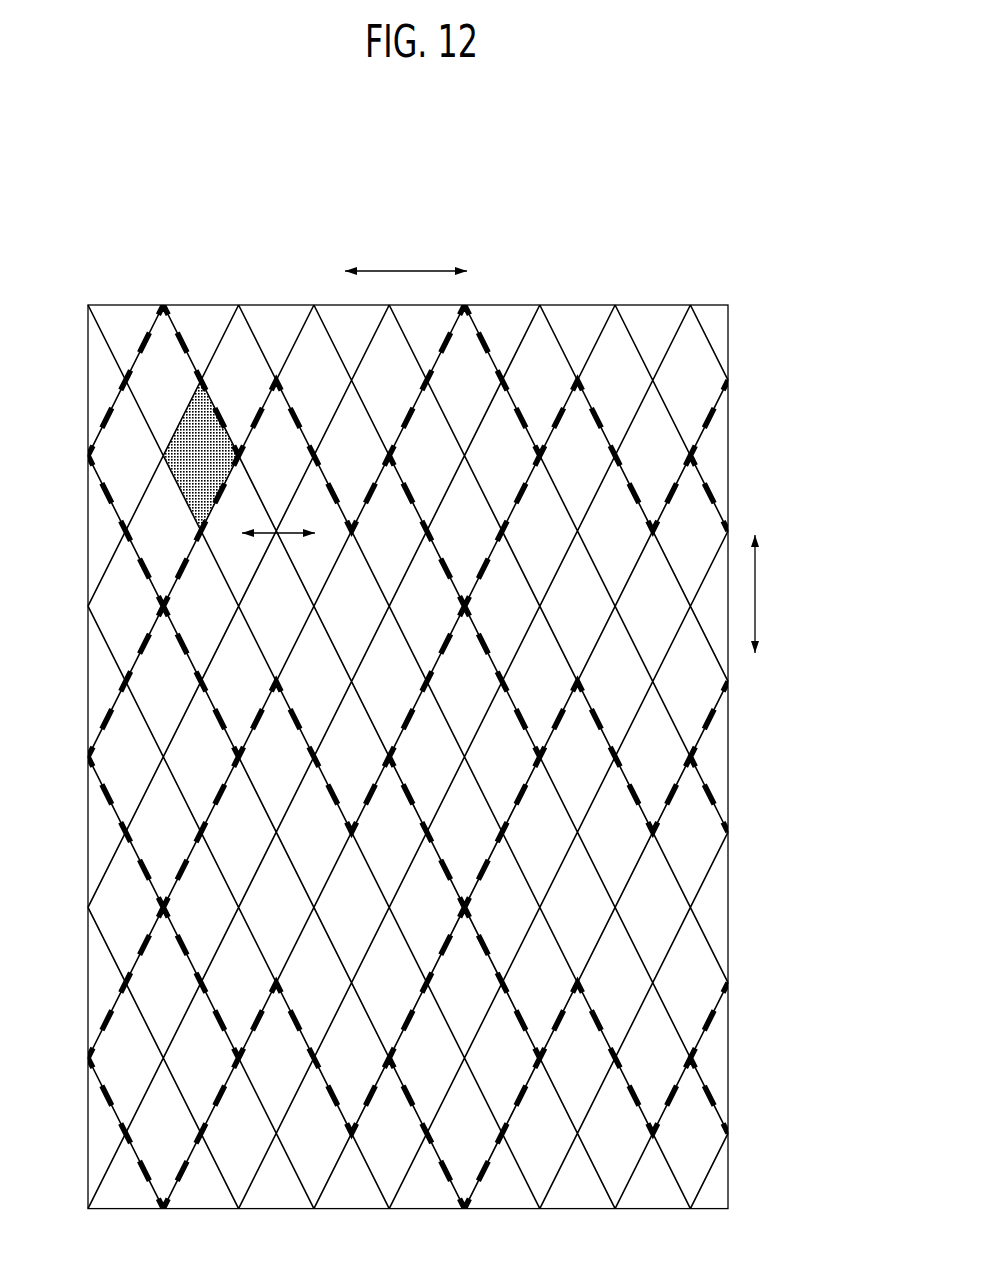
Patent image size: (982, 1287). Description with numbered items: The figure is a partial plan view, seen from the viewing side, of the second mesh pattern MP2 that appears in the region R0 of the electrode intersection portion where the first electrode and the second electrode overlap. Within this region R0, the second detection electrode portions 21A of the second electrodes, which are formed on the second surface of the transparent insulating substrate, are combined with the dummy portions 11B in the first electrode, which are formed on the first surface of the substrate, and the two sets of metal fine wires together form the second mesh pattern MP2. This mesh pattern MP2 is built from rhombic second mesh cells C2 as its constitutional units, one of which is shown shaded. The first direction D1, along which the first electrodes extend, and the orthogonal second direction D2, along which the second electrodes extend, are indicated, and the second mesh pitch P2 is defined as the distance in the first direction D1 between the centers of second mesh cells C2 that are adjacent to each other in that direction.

The second mesh pattern MP2 is at (435, 735).
The region R0 is at (730, 432).
The second detection electrode portions 21A is at (558, 330).
The dummy portions in the first electrode 11B is at (482, 342).
The second mesh cell C2 is at (187, 465).
The first direction D1 is at (406, 255).
The second direction D2 is at (774, 594).
The second mesh pitch P2 is at (285, 515).